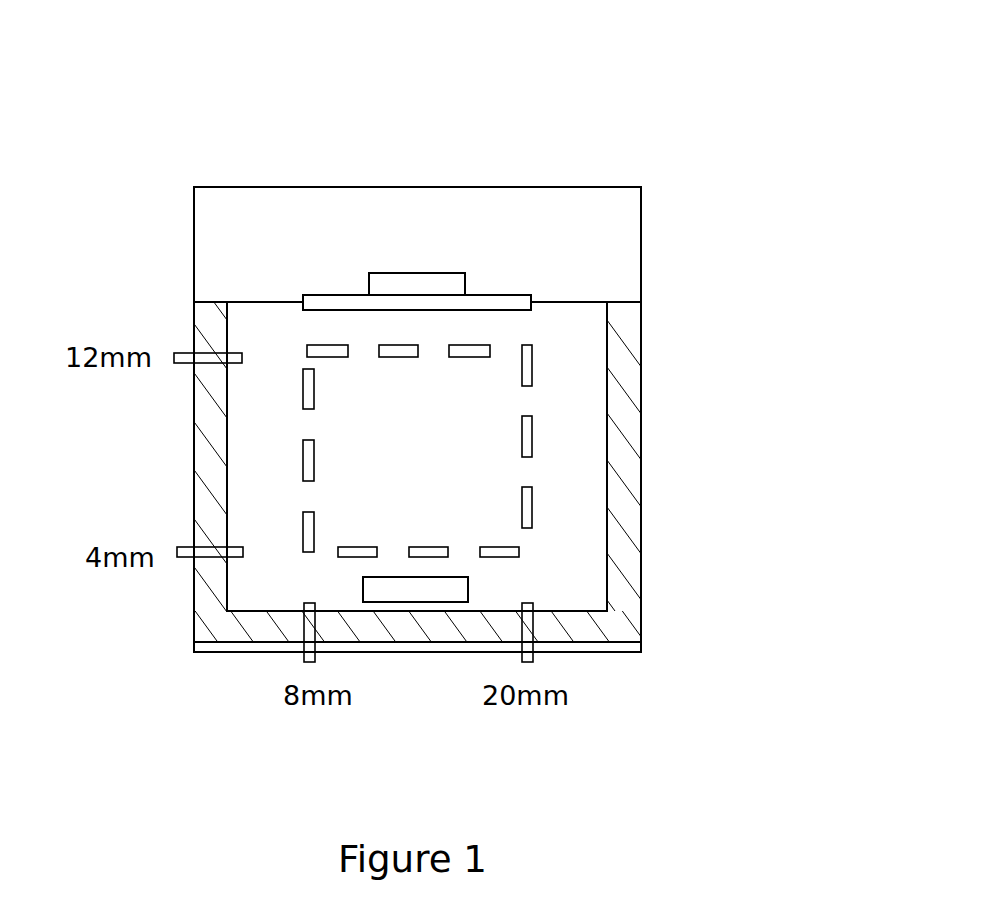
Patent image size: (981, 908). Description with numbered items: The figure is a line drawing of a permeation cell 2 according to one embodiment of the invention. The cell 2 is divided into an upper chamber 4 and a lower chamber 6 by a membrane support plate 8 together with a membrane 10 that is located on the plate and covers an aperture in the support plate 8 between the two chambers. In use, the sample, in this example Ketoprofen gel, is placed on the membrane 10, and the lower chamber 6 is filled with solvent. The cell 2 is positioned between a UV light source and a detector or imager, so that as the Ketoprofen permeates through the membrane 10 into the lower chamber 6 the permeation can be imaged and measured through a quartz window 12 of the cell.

The permeation cell 2 is at (694, 134).
The upper chamber 4 is at (303, 218).
The lower chamber 6 is at (268, 569).
The membrane support plate 8 is at (228, 293).
The membrane 10 is at (425, 293).
The quartz window 12 is at (358, 447).